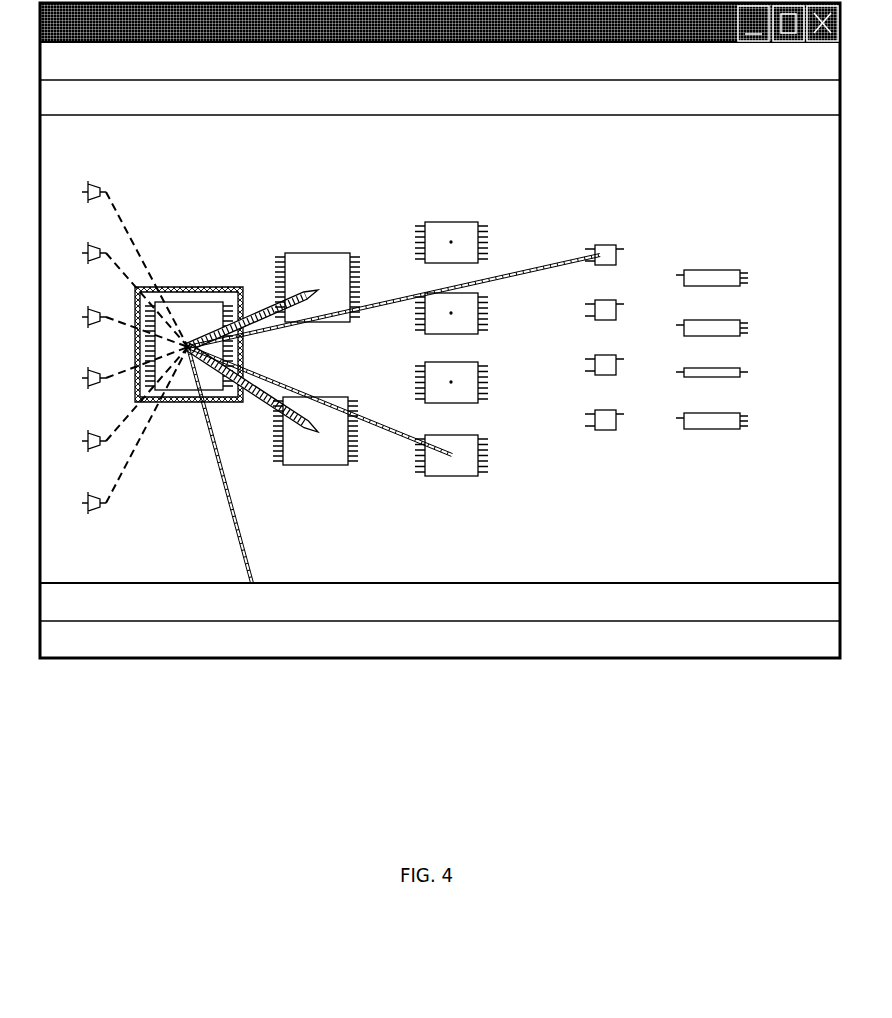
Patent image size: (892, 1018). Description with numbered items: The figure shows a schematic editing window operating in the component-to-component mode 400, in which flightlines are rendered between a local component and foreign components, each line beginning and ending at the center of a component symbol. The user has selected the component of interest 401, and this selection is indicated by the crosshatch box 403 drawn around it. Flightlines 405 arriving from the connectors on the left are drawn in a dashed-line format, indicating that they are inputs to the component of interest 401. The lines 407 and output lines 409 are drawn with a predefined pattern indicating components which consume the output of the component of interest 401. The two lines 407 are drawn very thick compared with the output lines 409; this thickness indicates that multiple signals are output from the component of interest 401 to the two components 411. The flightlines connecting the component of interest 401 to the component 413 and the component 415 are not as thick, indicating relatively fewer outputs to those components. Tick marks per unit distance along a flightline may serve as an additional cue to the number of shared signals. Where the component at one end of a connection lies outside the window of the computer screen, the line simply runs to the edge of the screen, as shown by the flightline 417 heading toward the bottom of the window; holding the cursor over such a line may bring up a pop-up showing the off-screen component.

The component-to-component mode 400 is at (162, 748).
The component of interest 401 is at (189, 309).
The crosshatch box 403 is at (193, 315).
The flightlines 405 is at (135, 339).
The lines 407 is at (264, 329).
The output lines 409 is at (393, 341).
The components 411 is at (323, 380).
The component 413 is at (460, 369).
The component 415 is at (666, 317).
The flightline 417 is at (240, 465).